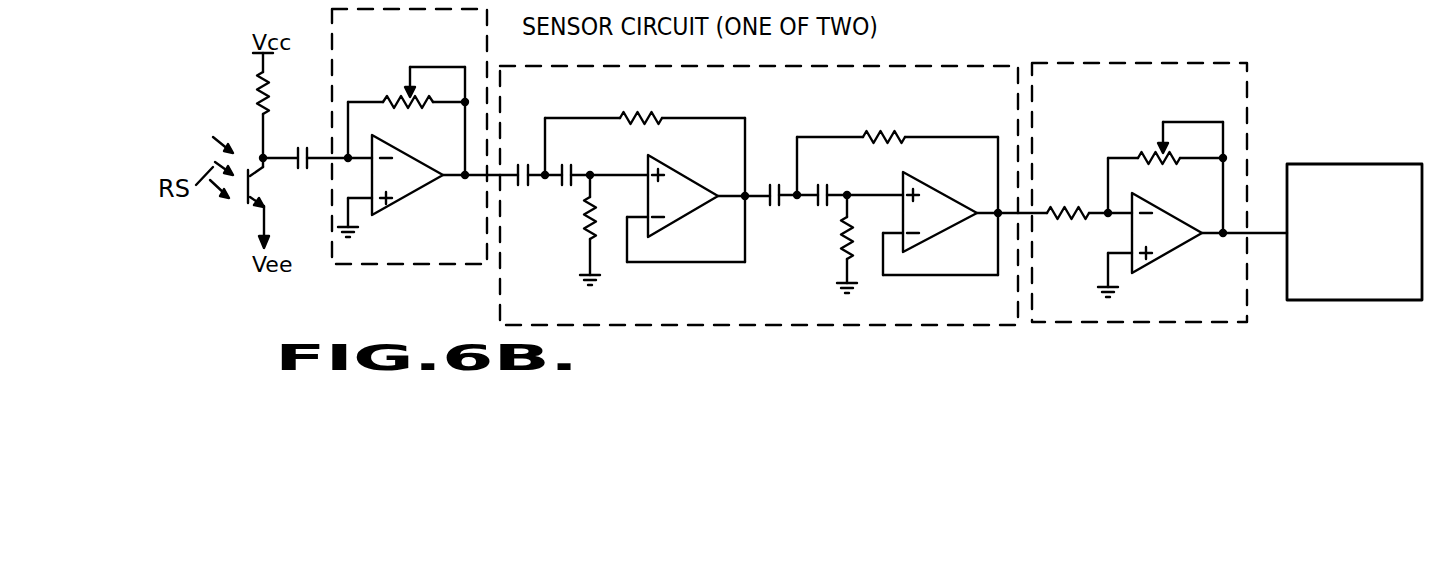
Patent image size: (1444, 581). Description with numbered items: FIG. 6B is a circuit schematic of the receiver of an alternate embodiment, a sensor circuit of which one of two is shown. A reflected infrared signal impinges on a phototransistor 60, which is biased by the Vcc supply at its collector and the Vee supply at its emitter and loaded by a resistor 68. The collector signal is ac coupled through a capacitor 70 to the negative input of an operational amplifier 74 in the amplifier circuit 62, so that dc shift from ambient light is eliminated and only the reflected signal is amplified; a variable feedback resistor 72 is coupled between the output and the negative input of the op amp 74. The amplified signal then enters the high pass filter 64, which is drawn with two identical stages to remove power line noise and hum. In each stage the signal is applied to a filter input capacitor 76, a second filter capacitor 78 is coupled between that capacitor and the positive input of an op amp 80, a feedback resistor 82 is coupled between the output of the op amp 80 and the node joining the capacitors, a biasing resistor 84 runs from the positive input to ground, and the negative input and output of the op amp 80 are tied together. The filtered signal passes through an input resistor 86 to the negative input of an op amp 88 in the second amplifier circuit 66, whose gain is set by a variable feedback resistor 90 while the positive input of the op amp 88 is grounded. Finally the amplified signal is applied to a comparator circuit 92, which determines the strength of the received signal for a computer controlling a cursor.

The phototransistor 60 is at (253, 214).
The amplifier circuit 62 is at (377, 51).
The high pass filter 64 is at (541, 106).
The second amplifier circuit 66 is at (1071, 107).
The resistor 68 is at (257, 78).
The capacitor 70 is at (301, 146).
The feedback resistor 72 is at (416, 118).
The operational amplifier 74 is at (398, 202).
The filter input capacitor 76 is at (522, 187).
The second filter capacitor 78 is at (563, 165).
The op amp 80 is at (682, 217).
The feedback resistor 82 is at (656, 117).
The biasing resistor 84 is at (586, 230).
The input resistor 86 is at (1063, 228).
The op amp 88 is at (1173, 252).
The feedback resistor 90 is at (1149, 156).
The comparator circuit 92 is at (1370, 255).